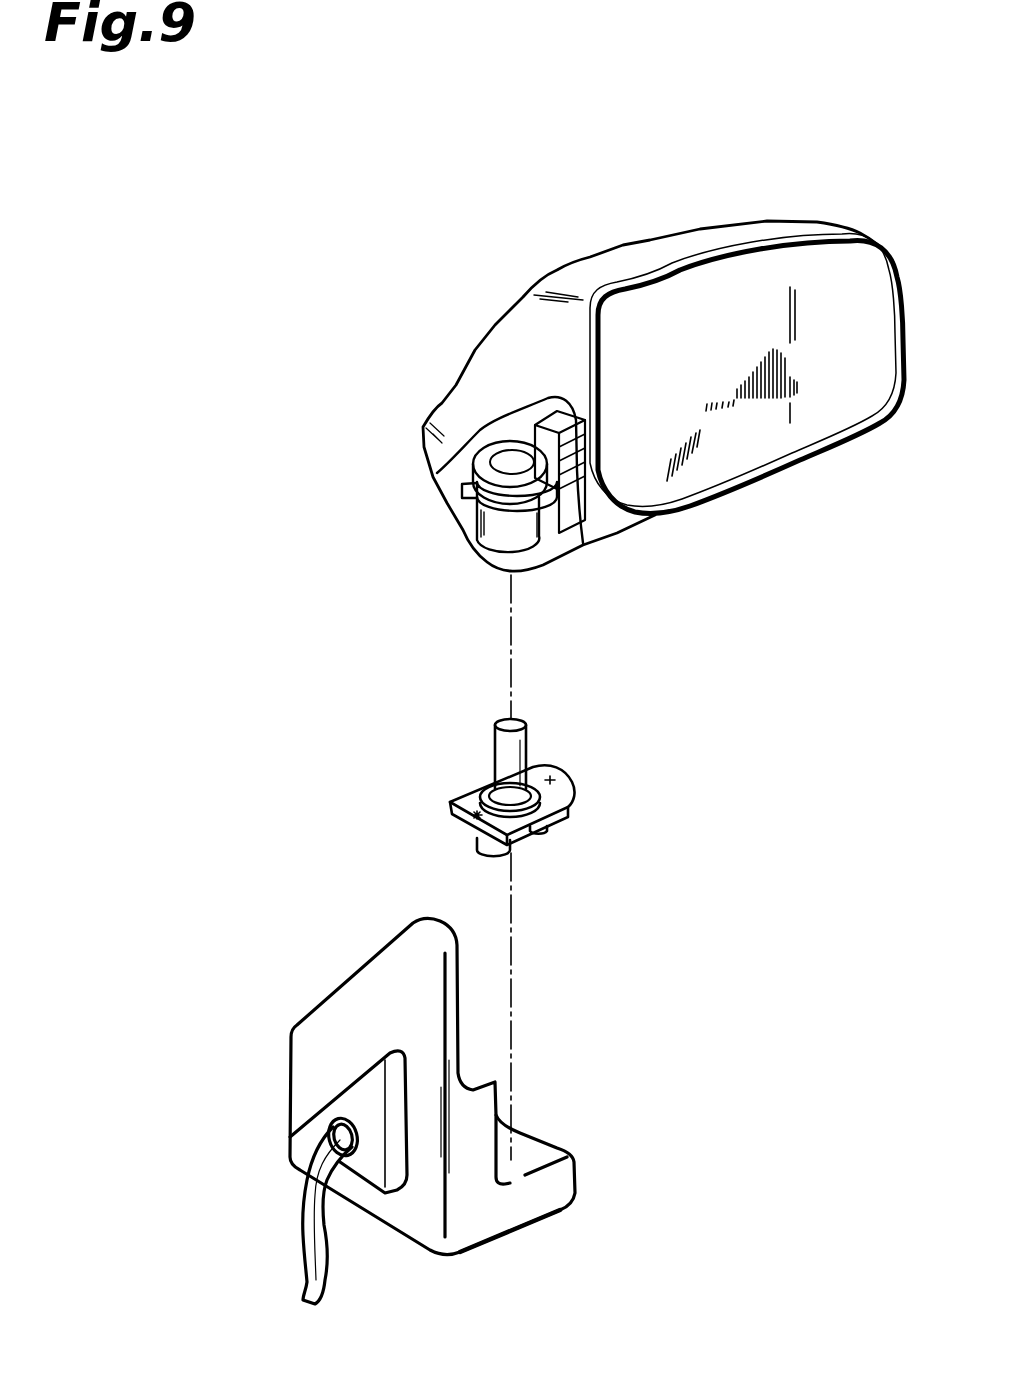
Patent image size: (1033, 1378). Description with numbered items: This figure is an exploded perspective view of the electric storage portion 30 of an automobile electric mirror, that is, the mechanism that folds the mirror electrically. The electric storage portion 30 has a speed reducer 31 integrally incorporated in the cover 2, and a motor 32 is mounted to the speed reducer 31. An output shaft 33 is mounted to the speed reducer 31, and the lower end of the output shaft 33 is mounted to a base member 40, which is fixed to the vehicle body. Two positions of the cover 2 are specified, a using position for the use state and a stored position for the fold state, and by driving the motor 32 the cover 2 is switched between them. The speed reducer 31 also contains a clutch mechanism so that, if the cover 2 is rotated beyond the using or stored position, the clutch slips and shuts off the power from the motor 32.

The cover 2 is at (636, 262).
The electric storage portion 30 is at (412, 567).
The speed reducer 31 is at (574, 515).
The motor 32 is at (517, 533).
The output shaft 33 is at (550, 812).
The base member 40 is at (553, 1197).